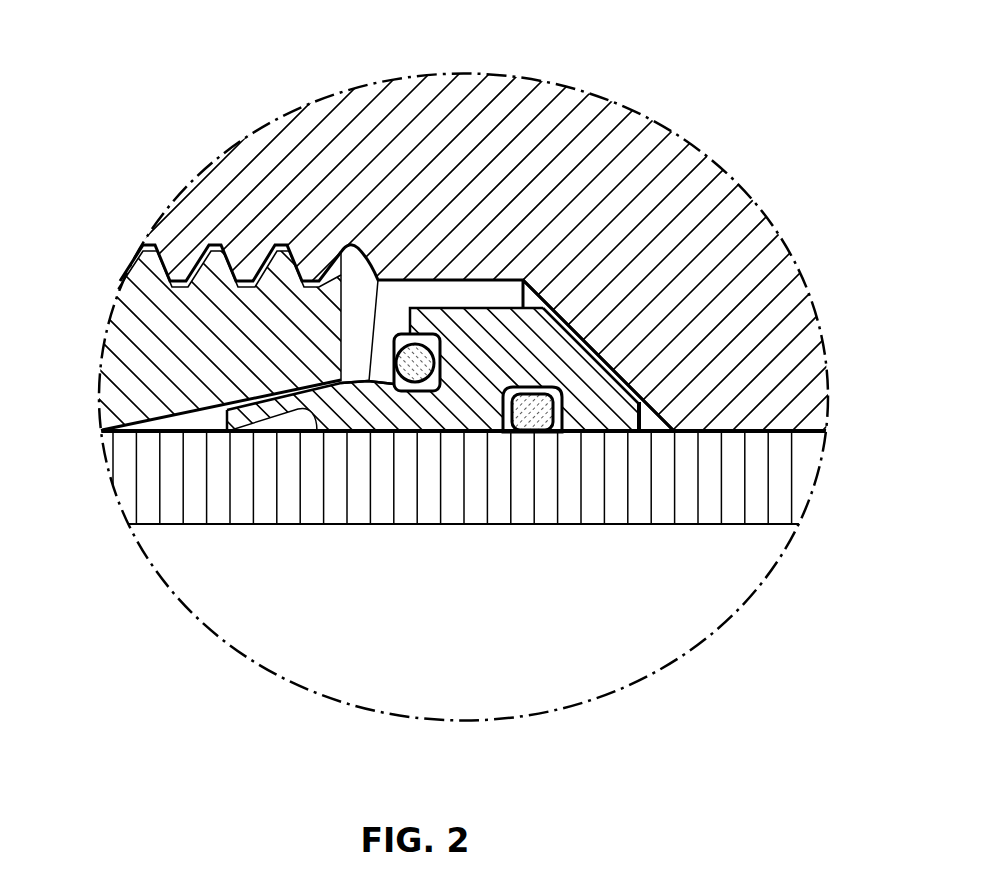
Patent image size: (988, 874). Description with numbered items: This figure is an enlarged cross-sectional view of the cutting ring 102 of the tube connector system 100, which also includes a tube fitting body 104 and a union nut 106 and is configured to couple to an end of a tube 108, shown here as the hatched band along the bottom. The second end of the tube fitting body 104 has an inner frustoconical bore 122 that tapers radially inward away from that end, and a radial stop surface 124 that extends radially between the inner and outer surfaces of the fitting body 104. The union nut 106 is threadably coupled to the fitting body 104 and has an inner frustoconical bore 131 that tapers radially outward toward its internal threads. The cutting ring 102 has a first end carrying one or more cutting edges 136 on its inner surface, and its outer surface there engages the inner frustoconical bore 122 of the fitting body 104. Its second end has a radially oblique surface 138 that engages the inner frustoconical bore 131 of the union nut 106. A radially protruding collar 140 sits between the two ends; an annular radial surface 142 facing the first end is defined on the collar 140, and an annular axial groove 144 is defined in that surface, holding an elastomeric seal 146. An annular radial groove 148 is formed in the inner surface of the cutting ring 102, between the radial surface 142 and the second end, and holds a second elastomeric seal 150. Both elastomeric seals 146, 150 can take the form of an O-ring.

The tube connector system 100 is at (722, 48).
The cutting ring 102 is at (455, 410).
The tube fitting body 104 is at (152, 338).
The union nut 106 is at (567, 220).
The tube 108 is at (682, 486).
The inner frustoconical bore 122 is at (166, 418).
The radial stop surface 124 is at (341, 326).
The inner frustoconical bore 131 is at (653, 420).
The cutting edges 136 is at (227, 422).
The radially oblique surface 138 is at (587, 340).
The radially protruding collar 140 is at (477, 327).
The annular radial surface 142 is at (403, 325).
The annular axial groove 144 is at (419, 392).
The elastomeric seal 146 is at (412, 364).
The annular radial groove 148 is at (568, 395).
The elastomeric seal 150 is at (537, 413).